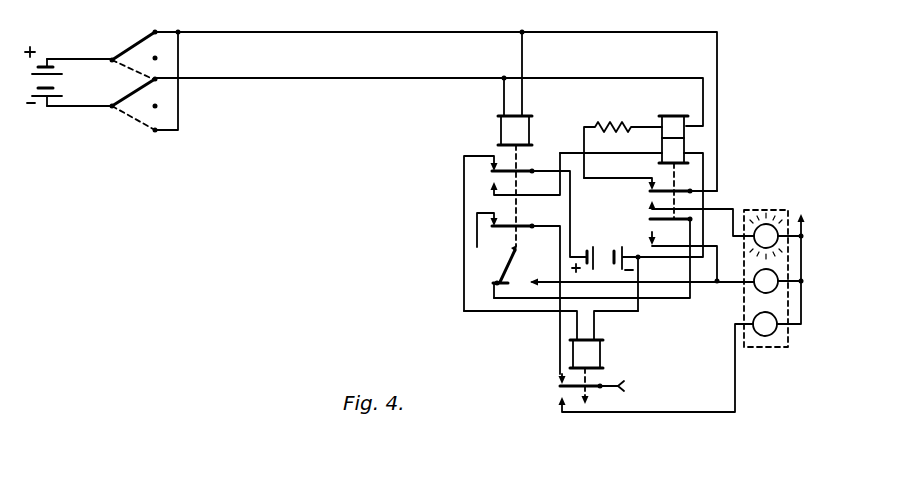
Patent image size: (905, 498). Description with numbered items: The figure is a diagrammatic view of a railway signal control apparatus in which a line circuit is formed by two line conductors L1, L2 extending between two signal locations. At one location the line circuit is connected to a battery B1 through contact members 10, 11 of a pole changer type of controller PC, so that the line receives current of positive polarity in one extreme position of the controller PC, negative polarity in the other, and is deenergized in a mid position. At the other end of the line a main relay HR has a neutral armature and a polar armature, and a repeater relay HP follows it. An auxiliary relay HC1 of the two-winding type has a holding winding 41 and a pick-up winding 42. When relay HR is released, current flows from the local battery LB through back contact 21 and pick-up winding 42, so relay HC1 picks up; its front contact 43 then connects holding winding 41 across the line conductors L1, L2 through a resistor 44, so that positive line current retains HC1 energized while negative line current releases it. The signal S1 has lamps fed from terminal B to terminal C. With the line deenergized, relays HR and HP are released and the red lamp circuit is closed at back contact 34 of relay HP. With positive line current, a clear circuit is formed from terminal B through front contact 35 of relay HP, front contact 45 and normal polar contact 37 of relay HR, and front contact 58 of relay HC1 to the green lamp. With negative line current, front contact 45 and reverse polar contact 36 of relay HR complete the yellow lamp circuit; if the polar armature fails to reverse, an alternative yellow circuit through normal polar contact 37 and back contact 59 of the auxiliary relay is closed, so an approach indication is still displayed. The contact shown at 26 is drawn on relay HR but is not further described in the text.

The pole changer type of controller PC is at (114, 67).
The contact member 10 is at (130, 50).
The contact member 11 is at (126, 98).
The battery B1 is at (43, 85).
The line conductor L1 is at (357, 28).
The line conductor L2 is at (355, 76).
The main relay HR is at (500, 128).
The resistor 44 is at (596, 124).
The holding winding 41 is at (660, 121).
The auxiliary relay HC1 is at (693, 100).
The pick-up winding 42 is at (664, 148).
The front contact 43 is at (652, 180).
The contact 26 is at (492, 168).
The back contact 21 is at (492, 186).
The front contact 58 is at (652, 206).
The front contact 45 is at (490, 221).
The local battery LB is at (610, 250).
The back contact 59 is at (652, 236).
The signal S1 is at (773, 208).
The terminal C is at (799, 204).
The normal polar contact 37 is at (507, 279).
The reverse polar contact 36 is at (533, 279).
The front contact 35 is at (558, 383).
The repeater relay HP is at (600, 355).
The terminal B is at (628, 388).
The back contact 34 is at (559, 402).